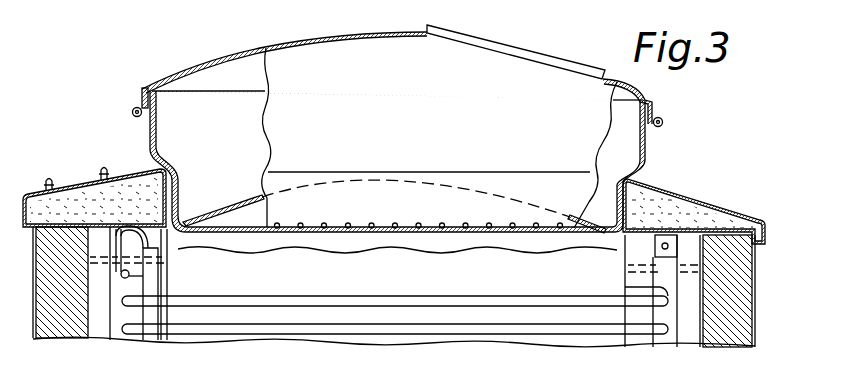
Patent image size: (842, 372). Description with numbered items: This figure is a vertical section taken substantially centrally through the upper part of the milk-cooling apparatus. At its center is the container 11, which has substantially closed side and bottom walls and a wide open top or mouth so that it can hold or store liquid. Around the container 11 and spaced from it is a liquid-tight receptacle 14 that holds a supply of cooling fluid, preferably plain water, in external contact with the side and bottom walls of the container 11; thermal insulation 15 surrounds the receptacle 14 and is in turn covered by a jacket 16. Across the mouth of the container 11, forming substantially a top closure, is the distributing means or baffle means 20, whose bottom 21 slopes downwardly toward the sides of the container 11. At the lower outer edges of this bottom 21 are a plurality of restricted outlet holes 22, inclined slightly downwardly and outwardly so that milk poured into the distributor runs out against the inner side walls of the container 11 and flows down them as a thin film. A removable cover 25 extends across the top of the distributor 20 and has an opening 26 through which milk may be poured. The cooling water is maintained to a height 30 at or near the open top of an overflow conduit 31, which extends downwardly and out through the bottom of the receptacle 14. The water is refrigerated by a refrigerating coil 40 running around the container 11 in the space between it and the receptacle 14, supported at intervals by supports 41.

The container 11 is at (180, 243).
The liquid-tight receptacle 14 is at (92, 337).
The thermal insulation 15 is at (72, 202).
The jacket 16 is at (33, 270).
The distributing means or baffle means 20 is at (157, 140).
The bottom 21 is at (449, 188).
The holes 22 is at (183, 222).
The removable cover 25 is at (222, 62).
The opening 26 is at (555, 58).
The height 30 is at (97, 251).
The overflow conduit 31 is at (158, 286).
The refrigerating coil 40 is at (457, 297).
The supports 41 is at (622, 281).